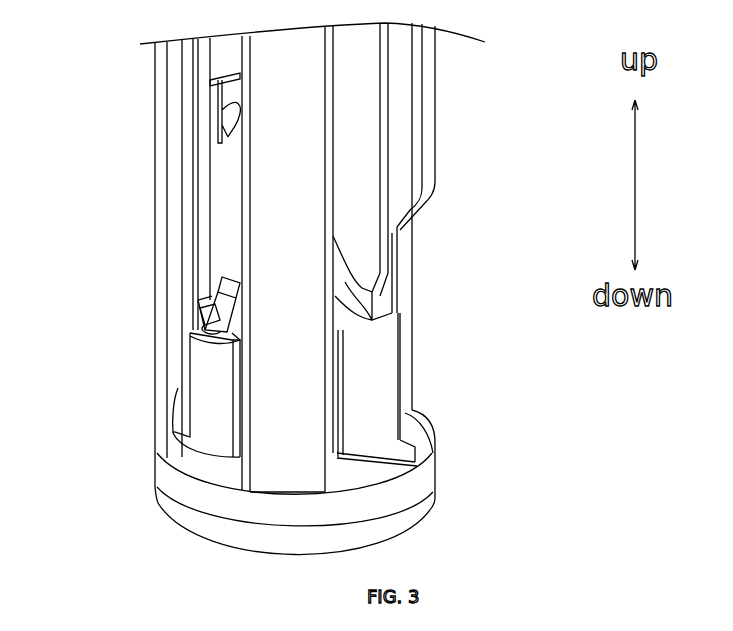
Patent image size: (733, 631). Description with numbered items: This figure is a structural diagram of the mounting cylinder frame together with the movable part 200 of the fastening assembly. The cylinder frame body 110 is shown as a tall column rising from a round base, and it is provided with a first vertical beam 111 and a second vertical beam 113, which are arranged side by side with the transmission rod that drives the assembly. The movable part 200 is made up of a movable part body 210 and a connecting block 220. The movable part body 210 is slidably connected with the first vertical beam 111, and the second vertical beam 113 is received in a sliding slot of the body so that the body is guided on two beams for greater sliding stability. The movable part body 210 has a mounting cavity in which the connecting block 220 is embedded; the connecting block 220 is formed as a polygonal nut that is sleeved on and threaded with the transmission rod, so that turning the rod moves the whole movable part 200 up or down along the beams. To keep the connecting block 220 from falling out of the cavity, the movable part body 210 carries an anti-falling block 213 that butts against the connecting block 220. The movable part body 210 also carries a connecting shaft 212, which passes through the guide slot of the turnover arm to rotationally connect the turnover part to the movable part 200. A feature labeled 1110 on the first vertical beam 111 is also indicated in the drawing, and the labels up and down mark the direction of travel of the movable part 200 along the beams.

The cylinder frame body 110 is at (443, 510).
The first vertical beam 111 is at (428, 138).
The slot 1110 is at (378, 313).
The second vertical beam 113 is at (185, 160).
The movable part 200 is at (77, 292).
The movable part body 210 is at (191, 407).
The connecting shaft 212 is at (222, 124).
The anti-falling block 213 is at (375, 280).
The connecting block 220 is at (210, 317).